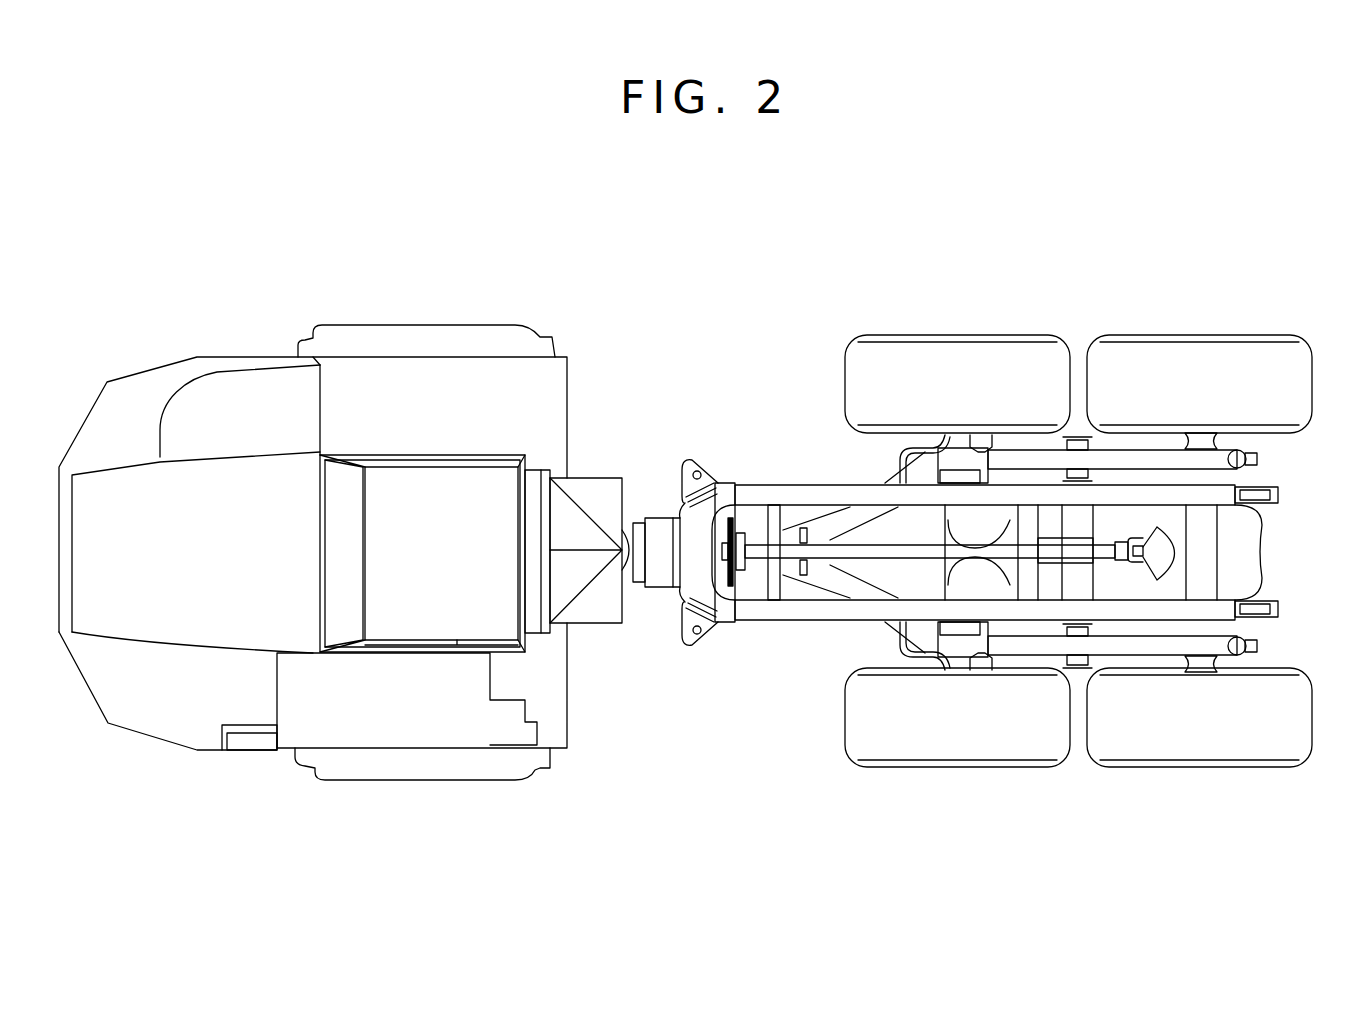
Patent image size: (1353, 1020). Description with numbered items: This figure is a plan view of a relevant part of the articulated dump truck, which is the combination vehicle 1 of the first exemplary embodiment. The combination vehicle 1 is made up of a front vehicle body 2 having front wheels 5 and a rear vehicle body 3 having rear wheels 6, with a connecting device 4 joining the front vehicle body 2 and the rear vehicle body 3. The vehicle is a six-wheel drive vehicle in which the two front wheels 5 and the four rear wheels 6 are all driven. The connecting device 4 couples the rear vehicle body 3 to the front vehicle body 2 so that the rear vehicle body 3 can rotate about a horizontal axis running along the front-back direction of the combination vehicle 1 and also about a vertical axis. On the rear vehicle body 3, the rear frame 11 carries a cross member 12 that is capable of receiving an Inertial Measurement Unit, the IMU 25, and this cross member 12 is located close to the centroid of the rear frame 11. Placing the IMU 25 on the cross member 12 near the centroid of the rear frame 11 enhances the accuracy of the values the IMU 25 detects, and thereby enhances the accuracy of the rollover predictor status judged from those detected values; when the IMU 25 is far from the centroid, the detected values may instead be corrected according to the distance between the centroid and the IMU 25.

The combination vehicle 1 is at (743, 318).
The front vehicle body 2 is at (612, 404).
The rear vehicle body 3 is at (778, 440).
The connecting device 4 is at (658, 522).
The front wheels 5 is at (458, 330).
The rear wheels 6 is at (1128, 355).
The rear frame 11 is at (1223, 492).
The cross member 12 is at (1085, 577).
The Inertial Measurement Unit (IMU) 25 is at (1082, 547).